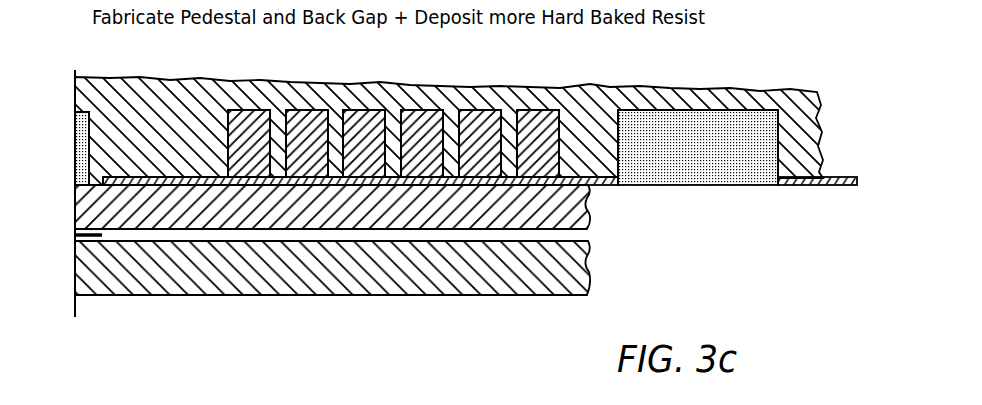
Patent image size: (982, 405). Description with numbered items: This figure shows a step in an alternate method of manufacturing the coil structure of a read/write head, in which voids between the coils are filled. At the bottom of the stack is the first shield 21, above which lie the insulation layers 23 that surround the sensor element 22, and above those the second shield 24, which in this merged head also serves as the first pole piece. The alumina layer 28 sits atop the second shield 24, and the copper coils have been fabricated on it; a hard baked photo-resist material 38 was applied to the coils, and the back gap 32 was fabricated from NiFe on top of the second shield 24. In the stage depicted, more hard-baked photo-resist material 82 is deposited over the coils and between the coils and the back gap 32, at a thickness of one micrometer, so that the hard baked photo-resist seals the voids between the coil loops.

The hard-baked photo-resist material 82 is at (158, 80).
The hard baked photo-resist material 38 is at (280, 137).
The back gap 32 is at (740, 188).
The alumina layer 28 is at (843, 177).
The second shield / first pole piece (S2/P1) 24 is at (590, 205).
The sensor element 22 is at (75, 236).
The insulation layers 23 is at (123, 236).
The first shield (S1) 21 is at (588, 258).